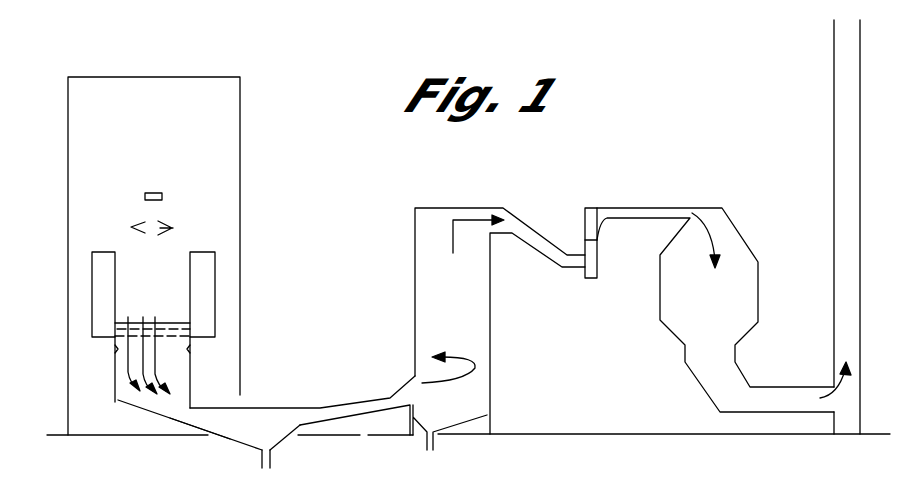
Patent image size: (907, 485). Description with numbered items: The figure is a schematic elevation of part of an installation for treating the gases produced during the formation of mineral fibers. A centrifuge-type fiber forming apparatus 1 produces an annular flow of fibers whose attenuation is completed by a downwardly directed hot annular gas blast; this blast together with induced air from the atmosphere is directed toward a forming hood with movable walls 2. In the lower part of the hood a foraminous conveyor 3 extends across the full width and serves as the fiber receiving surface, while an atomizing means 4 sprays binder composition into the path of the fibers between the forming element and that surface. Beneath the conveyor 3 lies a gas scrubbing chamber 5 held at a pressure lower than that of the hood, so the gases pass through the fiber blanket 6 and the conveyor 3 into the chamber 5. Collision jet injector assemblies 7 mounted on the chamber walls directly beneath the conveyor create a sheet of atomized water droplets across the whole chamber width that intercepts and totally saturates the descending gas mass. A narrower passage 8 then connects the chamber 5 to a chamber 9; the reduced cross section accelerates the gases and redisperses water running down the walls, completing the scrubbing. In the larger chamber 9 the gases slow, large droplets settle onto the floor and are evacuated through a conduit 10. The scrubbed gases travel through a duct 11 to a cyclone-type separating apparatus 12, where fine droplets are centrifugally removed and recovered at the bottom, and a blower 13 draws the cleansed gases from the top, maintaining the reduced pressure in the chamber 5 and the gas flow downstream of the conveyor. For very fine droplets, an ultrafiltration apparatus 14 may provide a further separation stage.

The apparatus for the formation of fibers 1 is at (163, 196).
The forming hood with movable walls 2 is at (205, 282).
The foraminous conveyor 3 is at (173, 338).
The atomizing means 4 is at (175, 226).
The gas scrubbing chamber 5 is at (120, 402).
The fiber blanket 6 is at (172, 322).
The collision jet injector assemblies 7 is at (117, 347).
The passage 8 is at (185, 413).
The chamber 9 is at (242, 425).
The conduit 10 is at (271, 457).
The duct 11 is at (335, 412).
The separating apparatus 12 is at (480, 320).
The blower 13 is at (597, 263).
The ultrafiltration apparatus 14 is at (732, 293).